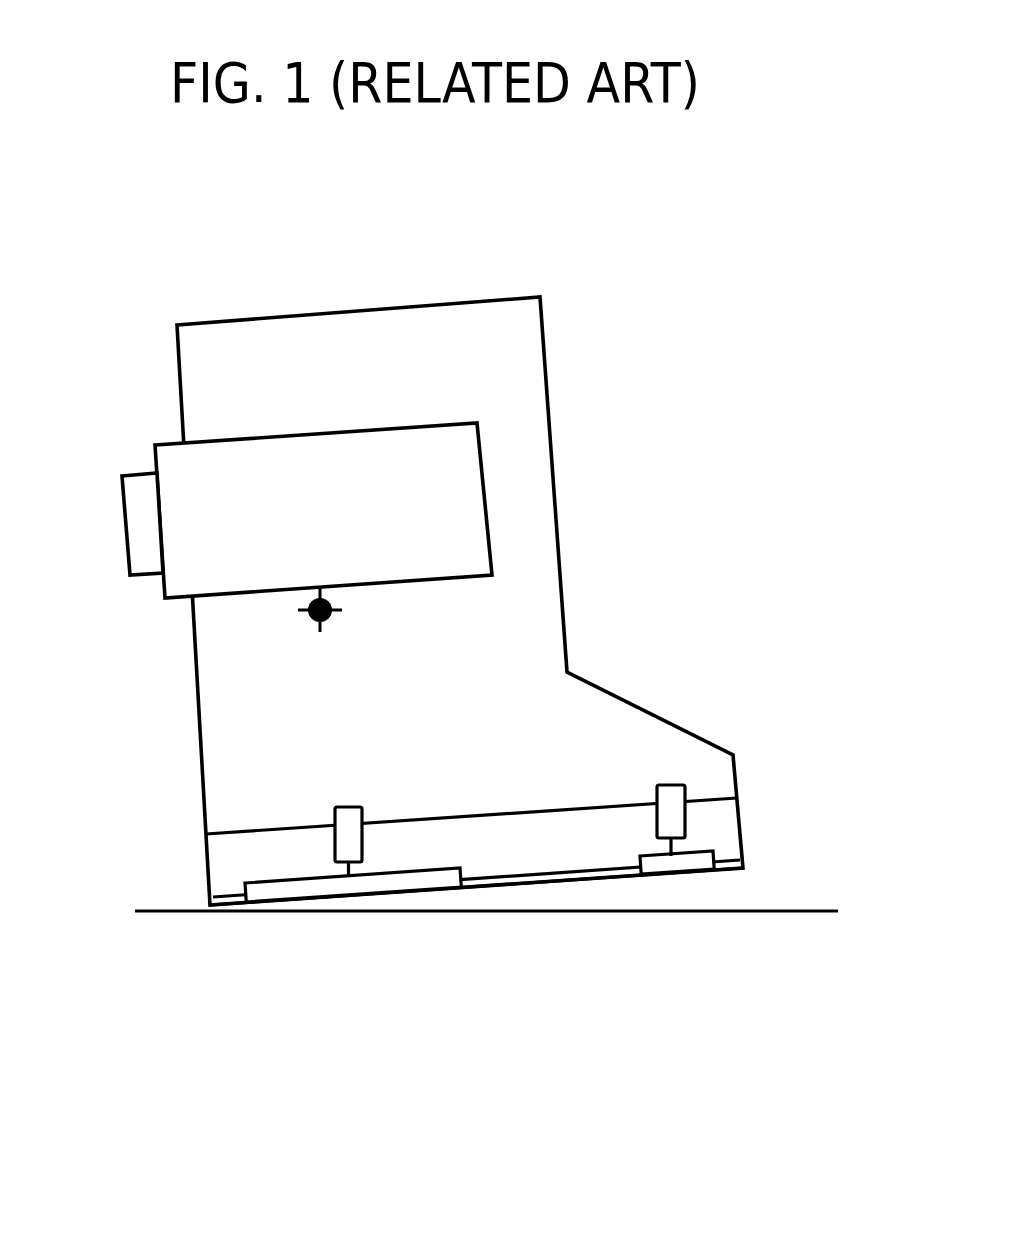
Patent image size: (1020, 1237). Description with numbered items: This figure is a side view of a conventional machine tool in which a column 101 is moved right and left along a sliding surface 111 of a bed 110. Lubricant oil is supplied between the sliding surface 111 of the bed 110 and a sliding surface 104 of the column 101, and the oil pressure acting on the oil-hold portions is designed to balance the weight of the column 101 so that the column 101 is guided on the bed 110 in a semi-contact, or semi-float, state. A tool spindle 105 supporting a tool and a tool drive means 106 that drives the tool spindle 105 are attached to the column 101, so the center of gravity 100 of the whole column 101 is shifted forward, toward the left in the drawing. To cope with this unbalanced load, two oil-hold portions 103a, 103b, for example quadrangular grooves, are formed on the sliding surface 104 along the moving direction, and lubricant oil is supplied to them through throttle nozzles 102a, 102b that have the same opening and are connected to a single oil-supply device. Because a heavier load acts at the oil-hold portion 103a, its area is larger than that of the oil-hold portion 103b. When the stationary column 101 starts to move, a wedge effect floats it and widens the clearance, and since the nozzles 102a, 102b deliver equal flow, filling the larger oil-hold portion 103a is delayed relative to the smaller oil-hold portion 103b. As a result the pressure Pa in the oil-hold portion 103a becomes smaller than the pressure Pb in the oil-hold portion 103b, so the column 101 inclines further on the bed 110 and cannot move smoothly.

The center of gravity 100 is at (328, 620).
The column 101 is at (505, 365).
The throttle nozzle 102a is at (345, 822).
The throttle nozzle 102b is at (672, 788).
The oil-hold portion 103a is at (283, 889).
The oil-hold portion 103b is at (695, 858).
The sliding surface 104 is at (600, 882).
The tool spindle 105 is at (140, 520).
The tool drive means 106 is at (300, 470).
The bed 110 is at (455, 957).
The sliding surface 111 is at (168, 908).
The pressure Pa is at (380, 890).
The pressure Pb is at (655, 860).